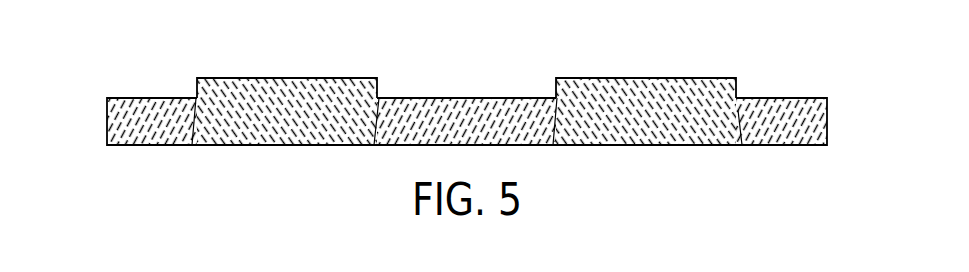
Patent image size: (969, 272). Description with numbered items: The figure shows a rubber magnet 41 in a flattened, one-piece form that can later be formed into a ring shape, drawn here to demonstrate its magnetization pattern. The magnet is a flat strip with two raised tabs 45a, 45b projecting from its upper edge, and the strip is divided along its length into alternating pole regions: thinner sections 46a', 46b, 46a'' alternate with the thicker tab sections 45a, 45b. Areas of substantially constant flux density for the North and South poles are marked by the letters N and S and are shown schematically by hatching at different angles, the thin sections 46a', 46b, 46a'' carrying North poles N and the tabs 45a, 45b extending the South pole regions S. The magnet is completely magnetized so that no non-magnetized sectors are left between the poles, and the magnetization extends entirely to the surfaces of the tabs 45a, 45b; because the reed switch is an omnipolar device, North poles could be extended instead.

The rubber magnet 41 is at (461, 75).
The tab 45a is at (288, 93).
The tab 45b is at (649, 93).
The first end thin magnetic portion (N pole) 46a' is at (142, 93).
The second end thin magnetic portion (N pole) 46a'' is at (762, 93).
The middle thin magnetic portion (N pole) 46b is at (467, 93).
The North pole N is at (471, 93).
The South pole S is at (466, 93).